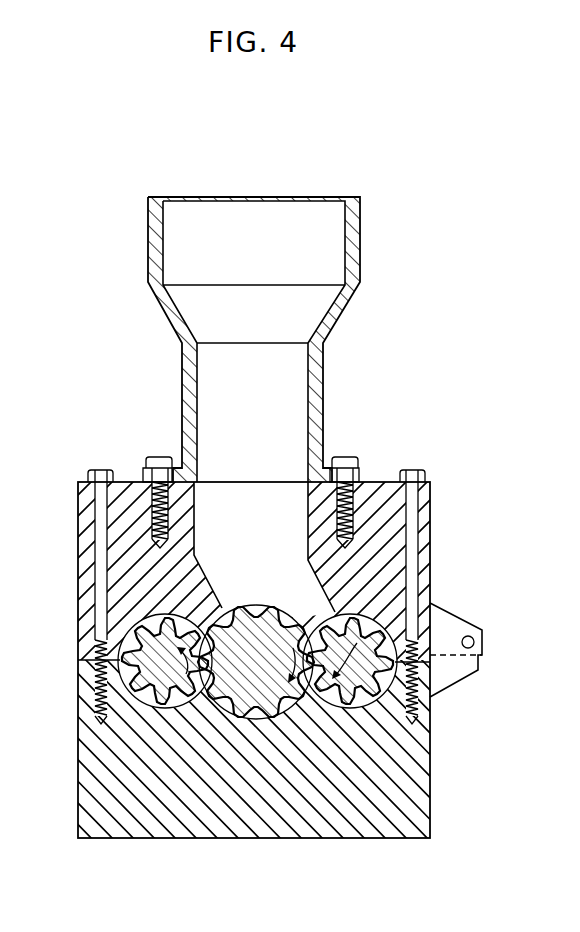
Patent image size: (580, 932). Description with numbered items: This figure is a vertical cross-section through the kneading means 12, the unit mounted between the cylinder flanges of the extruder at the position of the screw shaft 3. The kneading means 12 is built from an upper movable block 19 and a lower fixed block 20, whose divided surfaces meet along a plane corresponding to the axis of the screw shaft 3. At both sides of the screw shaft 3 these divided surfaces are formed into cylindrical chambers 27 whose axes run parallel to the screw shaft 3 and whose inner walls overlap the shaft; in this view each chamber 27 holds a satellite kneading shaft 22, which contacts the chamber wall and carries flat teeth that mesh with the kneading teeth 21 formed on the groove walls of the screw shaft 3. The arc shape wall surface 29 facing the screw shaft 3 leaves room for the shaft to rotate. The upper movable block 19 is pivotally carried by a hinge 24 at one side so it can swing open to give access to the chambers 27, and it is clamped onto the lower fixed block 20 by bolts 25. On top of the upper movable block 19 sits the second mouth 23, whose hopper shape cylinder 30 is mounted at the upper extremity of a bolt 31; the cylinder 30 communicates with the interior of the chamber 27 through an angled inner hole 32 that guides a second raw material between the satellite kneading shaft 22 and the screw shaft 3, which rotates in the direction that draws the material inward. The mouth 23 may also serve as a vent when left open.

The kneading means 12 is at (414, 203).
The mouth 23 is at (299, 210).
The hopper shape cylinder 30 is at (360, 255).
The inner hole 32 is at (300, 505).
The bolts 25 is at (100, 470).
The bolt 31 is at (160, 457).
The upper movable block 19 is at (428, 512).
The lower fixed block 20 is at (413, 787).
The screw shaft 3 is at (261, 620).
The kneading teeth 21 is at (252, 604).
The satellite kneading shafts 22 is at (127, 633).
The cylindrical chambers 27 is at (140, 703).
The arc shape wall surface 29 is at (247, 719).
The hinge 24 is at (483, 632).